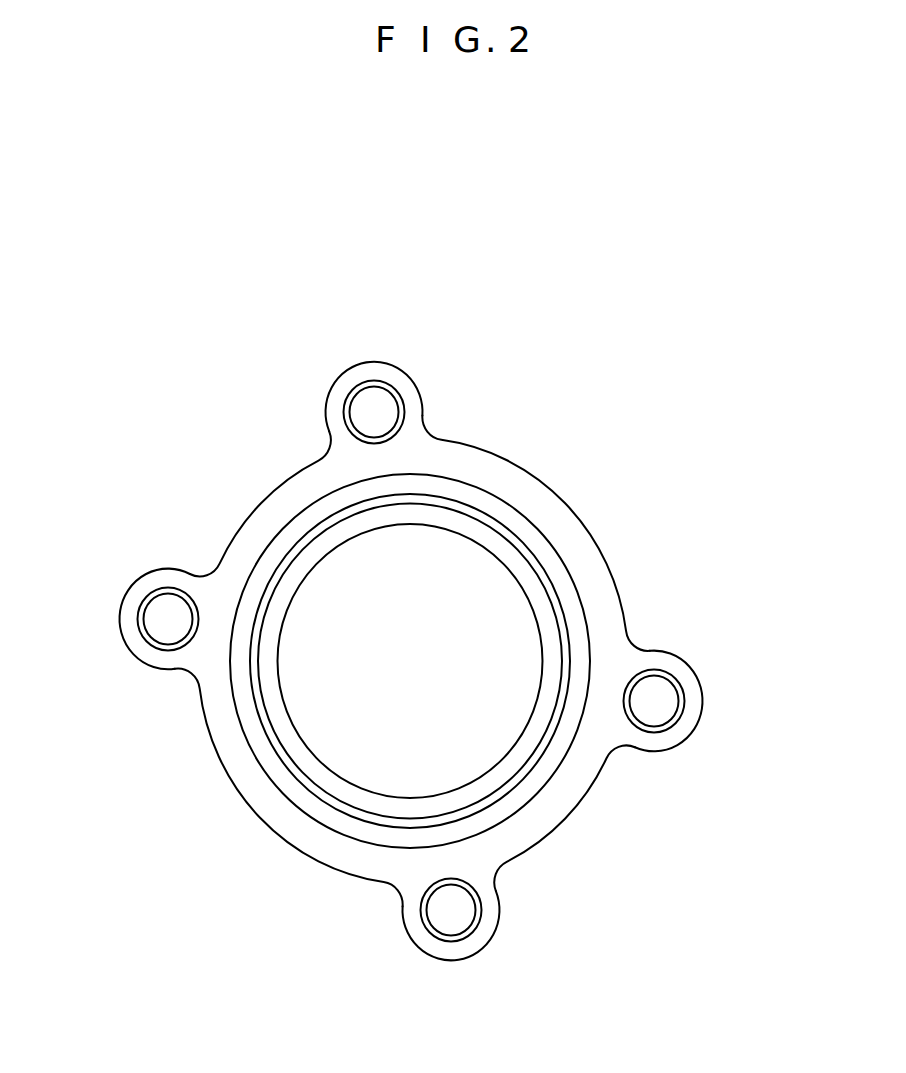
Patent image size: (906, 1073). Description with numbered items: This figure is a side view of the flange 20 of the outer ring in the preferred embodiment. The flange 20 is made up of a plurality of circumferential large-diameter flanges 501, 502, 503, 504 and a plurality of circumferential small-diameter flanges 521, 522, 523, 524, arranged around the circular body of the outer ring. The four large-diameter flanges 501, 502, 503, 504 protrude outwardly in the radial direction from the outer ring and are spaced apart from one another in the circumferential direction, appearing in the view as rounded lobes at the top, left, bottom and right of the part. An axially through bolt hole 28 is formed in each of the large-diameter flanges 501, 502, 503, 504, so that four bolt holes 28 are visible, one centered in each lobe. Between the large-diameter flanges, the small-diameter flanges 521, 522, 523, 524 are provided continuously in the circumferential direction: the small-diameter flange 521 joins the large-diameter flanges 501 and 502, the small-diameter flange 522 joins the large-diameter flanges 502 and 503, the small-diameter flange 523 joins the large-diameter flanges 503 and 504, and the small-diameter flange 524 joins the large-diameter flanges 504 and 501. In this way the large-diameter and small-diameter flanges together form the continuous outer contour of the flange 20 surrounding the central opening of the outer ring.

The flange 20 is at (337, 370).
The bolt hole 28 is at (385, 413).
The large-diameter flange 501 is at (392, 375).
The large-diameter flange 502 is at (130, 617).
The large-diameter flange 503 is at (458, 948).
The large-diameter flange 504 is at (688, 702).
The small-diameter flange 521 is at (265, 518).
The small-diameter flange 522 is at (272, 812).
The small-diameter flange 523 is at (548, 810).
The small-diameter flange 524 is at (563, 522).